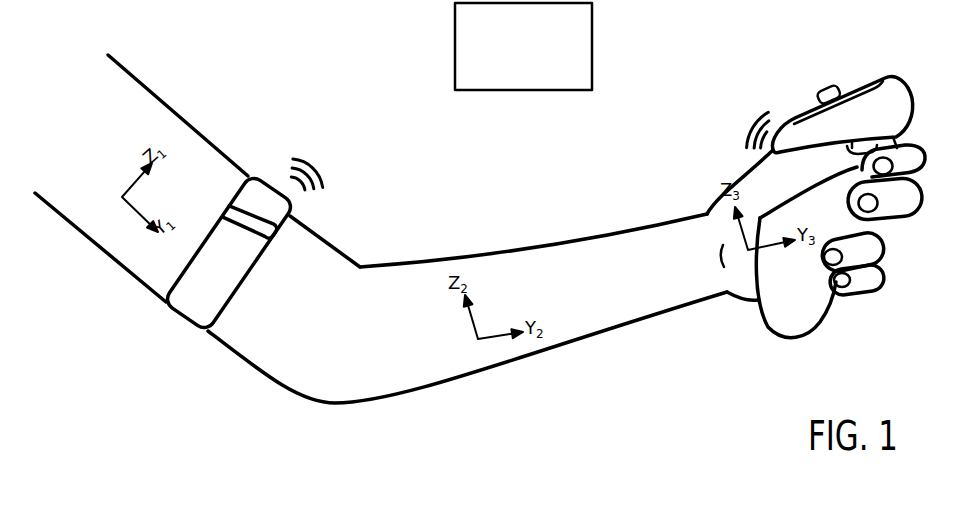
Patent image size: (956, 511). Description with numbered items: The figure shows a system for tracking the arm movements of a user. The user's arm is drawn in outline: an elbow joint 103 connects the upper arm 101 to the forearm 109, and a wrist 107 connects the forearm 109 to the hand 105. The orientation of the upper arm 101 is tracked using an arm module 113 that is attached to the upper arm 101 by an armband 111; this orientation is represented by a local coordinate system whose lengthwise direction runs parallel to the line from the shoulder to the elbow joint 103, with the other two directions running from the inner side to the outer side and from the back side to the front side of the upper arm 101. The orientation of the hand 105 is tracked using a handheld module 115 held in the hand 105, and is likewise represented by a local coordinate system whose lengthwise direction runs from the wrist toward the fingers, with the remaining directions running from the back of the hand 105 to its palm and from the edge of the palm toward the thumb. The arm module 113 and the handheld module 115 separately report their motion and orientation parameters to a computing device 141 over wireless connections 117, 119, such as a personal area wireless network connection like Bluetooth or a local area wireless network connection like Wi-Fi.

The upper arm 101 is at (163, 98).
The elbow joint 103 is at (337, 405).
The hand 105 is at (748, 302).
The wrist 107 is at (705, 217).
The forearm 109 is at (488, 253).
The armband 111 is at (173, 320).
The arm module 113 is at (270, 175).
The handheld module 115 is at (817, 333).
The wireless connection 117 is at (321, 168).
The wireless connection 119 is at (745, 128).
The computing device 141 is at (577, 75).